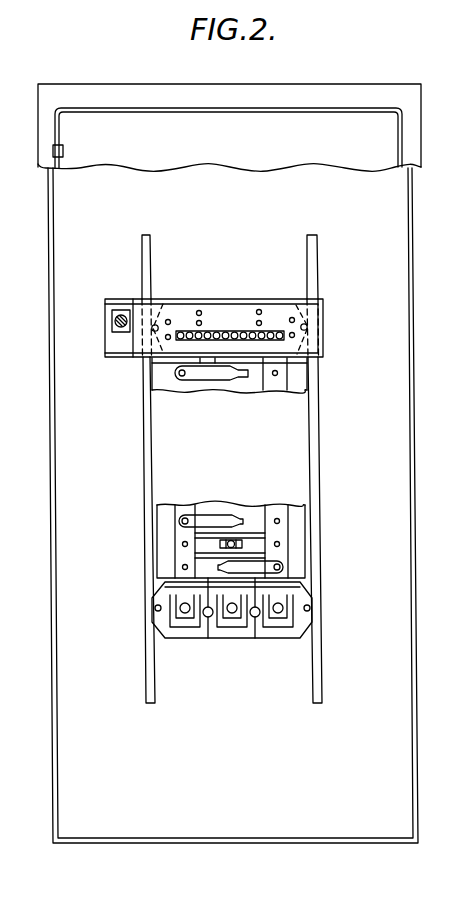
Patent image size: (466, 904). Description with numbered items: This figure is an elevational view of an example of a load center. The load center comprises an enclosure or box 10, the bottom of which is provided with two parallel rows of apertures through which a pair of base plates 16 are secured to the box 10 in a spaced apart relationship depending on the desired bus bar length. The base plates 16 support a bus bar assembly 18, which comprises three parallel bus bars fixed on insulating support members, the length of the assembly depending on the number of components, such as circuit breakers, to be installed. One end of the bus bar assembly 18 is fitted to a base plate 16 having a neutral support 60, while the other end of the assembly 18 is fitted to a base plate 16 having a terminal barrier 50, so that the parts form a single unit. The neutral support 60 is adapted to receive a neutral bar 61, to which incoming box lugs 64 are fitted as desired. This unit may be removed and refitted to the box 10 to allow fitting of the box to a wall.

The enclosure or box 10 is at (52, 765).
The base plate 16 is at (158, 308).
The bus bar assembly 18 is at (323, 361).
The terminal barrier 50 is at (266, 634).
The neutral support 60 is at (252, 287).
The neutral bar 61 is at (277, 318).
The box lug 64 is at (113, 316).